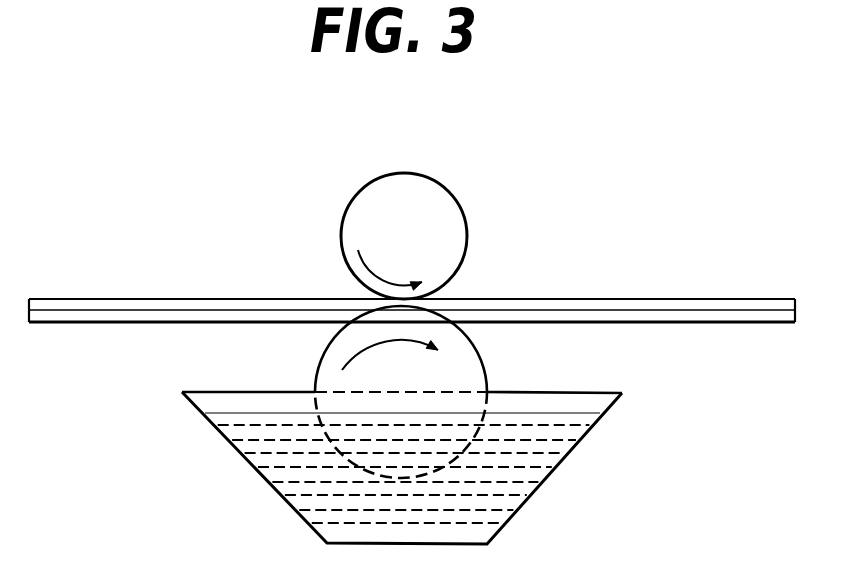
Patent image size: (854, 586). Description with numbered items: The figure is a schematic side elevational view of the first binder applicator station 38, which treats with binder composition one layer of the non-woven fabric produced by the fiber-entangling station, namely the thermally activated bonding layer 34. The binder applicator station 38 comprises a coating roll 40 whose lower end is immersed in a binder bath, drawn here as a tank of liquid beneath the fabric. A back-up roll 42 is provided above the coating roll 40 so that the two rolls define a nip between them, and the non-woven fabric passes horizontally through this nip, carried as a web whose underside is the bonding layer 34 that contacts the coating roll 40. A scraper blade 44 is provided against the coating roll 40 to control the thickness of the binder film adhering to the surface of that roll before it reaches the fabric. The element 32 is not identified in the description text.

The substrate web 32 is at (208, 299).
The thermally activated bonding layer 34 is at (77, 326).
The first binder applicator station 38 is at (607, 202).
The coating roll 40 is at (468, 377).
The back-up roll 42 is at (448, 212).
The scraper blade 44 is at (312, 388).